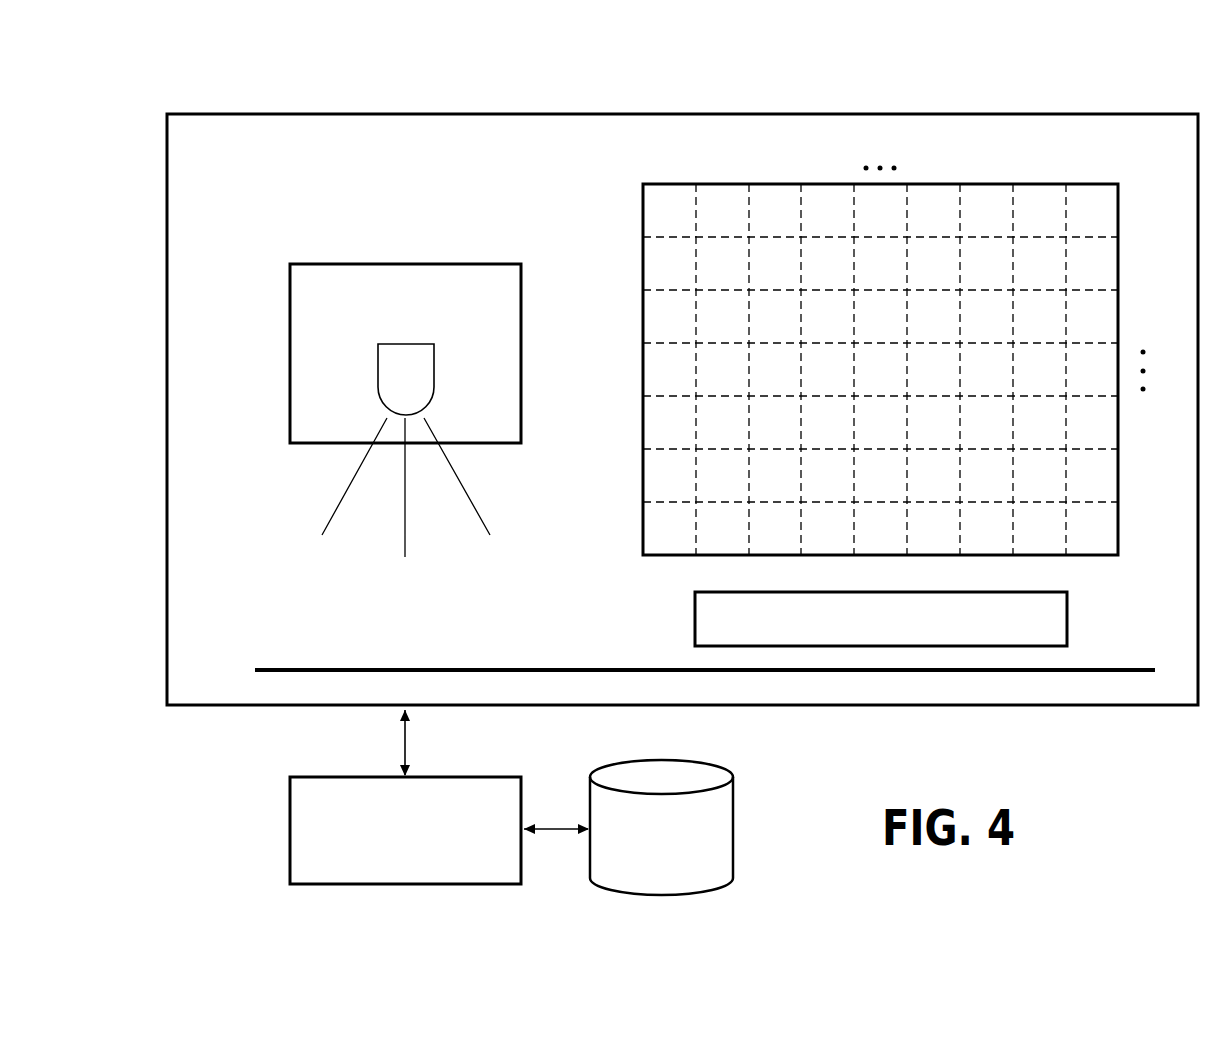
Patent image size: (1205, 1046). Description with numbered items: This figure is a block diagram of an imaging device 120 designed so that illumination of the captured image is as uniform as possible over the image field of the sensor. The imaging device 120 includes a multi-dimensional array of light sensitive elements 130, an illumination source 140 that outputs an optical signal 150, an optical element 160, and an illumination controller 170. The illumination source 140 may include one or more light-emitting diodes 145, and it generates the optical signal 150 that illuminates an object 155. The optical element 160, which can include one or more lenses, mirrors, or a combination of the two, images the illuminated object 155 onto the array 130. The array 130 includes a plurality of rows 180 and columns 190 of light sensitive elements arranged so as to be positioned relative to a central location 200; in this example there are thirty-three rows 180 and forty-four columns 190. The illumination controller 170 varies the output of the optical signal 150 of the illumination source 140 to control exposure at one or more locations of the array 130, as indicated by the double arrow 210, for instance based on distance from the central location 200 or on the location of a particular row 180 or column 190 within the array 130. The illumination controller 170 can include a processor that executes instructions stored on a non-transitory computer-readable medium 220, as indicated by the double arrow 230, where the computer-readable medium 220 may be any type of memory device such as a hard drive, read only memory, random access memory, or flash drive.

The imaging device 120 is at (333, 96).
The multi-dimensional array of light sensitive elements 130 is at (636, 321).
The illumination source 140 is at (405, 263).
The light-emitting diode 145 is at (438, 371).
The optical signal 150 is at (479, 509).
The object 155 is at (318, 668).
The optical element 160 is at (694, 620).
The illumination controller 170 is at (289, 834).
The row 180 is at (658, 213).
The column 190 is at (725, 545).
The central location 200 is at (883, 362).
The double arrow 210 is at (402, 745).
The non-transitory computer-readable medium 220 is at (734, 832).
The double arrow 230 is at (558, 825).